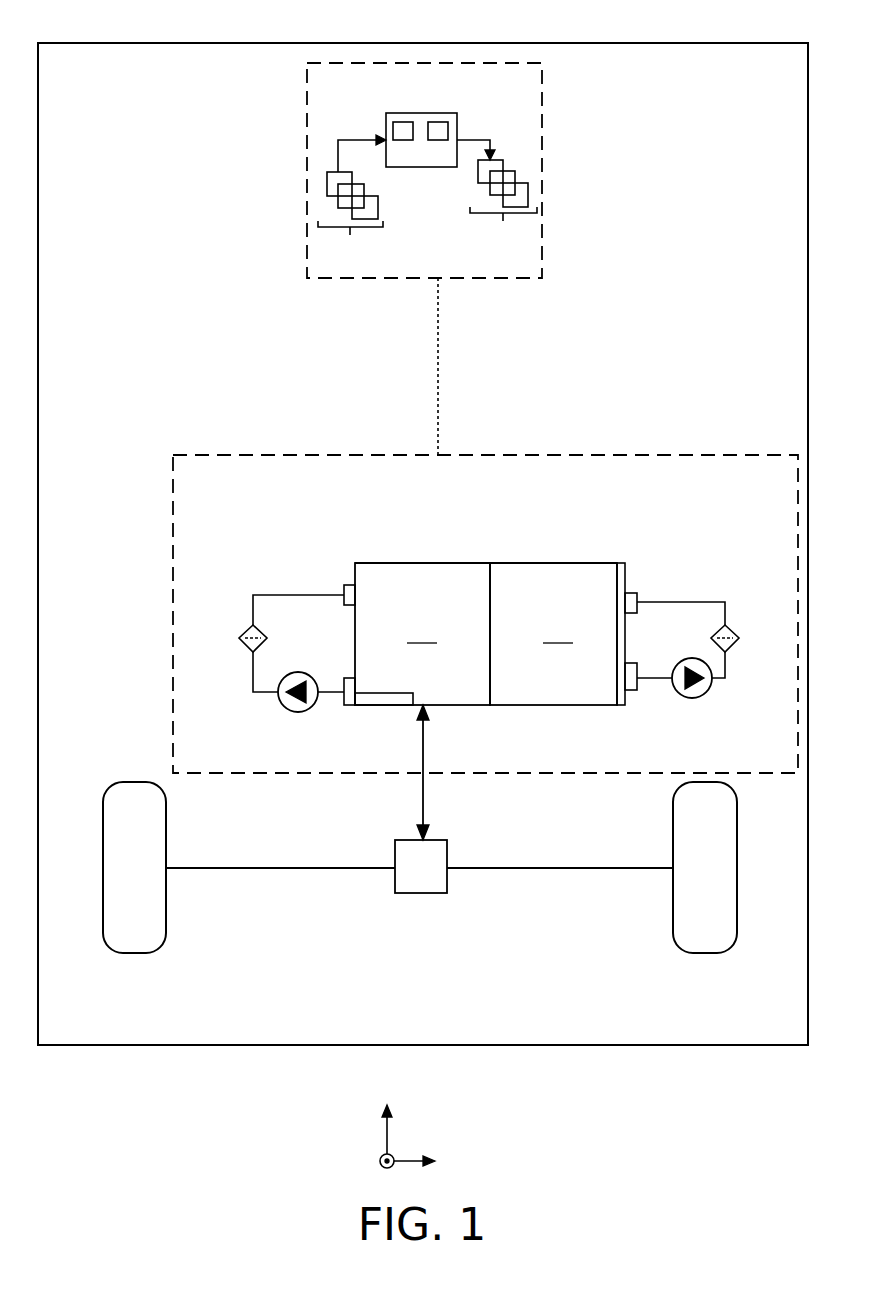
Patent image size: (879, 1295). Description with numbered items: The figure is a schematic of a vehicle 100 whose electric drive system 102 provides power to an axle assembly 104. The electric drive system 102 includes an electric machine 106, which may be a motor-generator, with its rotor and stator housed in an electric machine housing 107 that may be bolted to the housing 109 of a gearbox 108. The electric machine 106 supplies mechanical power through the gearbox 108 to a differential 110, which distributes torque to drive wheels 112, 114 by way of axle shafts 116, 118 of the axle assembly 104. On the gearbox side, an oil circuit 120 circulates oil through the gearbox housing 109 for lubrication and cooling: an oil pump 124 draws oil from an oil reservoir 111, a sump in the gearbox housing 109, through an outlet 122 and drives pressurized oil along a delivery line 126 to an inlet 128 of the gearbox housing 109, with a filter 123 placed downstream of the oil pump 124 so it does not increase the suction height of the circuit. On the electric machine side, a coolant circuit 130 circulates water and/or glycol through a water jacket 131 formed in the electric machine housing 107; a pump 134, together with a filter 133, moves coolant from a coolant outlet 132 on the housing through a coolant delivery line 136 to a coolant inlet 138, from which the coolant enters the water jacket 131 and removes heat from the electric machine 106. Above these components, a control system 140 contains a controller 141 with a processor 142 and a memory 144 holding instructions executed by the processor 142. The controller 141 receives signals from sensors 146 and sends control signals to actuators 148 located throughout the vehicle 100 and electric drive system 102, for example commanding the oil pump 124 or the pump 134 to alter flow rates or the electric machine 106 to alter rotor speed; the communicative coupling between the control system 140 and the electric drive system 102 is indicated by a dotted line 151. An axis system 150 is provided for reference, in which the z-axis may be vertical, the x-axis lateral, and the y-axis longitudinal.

The vehicle 100 is at (147, 43).
The electric drive system 102 is at (362, 455).
The axle assembly 104 is at (352, 912).
The electric machine 106 is at (563, 609).
The electric machine housing 107 is at (565, 563).
The gearbox 108 is at (422, 630).
The gearbox housing 109 is at (380, 563).
The differential 110 is at (432, 840).
The oil reservoir 111 is at (382, 705).
The drive wheel 112 is at (135, 953).
The drive wheel 114 is at (705, 953).
The axle shaft 116 is at (270, 868).
The axle shaft 118 is at (565, 868).
The oil circuit 120 is at (276, 520).
The outlet 122 is at (347, 705).
The filter 123 is at (243, 645).
The oil pump 124 is at (306, 675).
The delivery line 126 is at (280, 595).
The inlet 128 is at (348, 585).
The coolant circuit 130 is at (712, 520).
The water jacket 131 is at (619, 563).
The coolant outlet 132 is at (640, 690).
The filter 133 is at (735, 645).
The pump 134 is at (706, 692).
The coolant delivery line 136 is at (695, 602).
The coolant inlet 138 is at (637, 612).
The control system 140 is at (306, 127).
The controller 141 is at (412, 113).
The processor 142 is at (393, 128).
The memory 144 is at (448, 130).
The sensors 146 is at (352, 201).
The actuators 148 is at (497, 195).
The axis system 150 is at (453, 1103).
The dotted line 151 is at (437, 360).